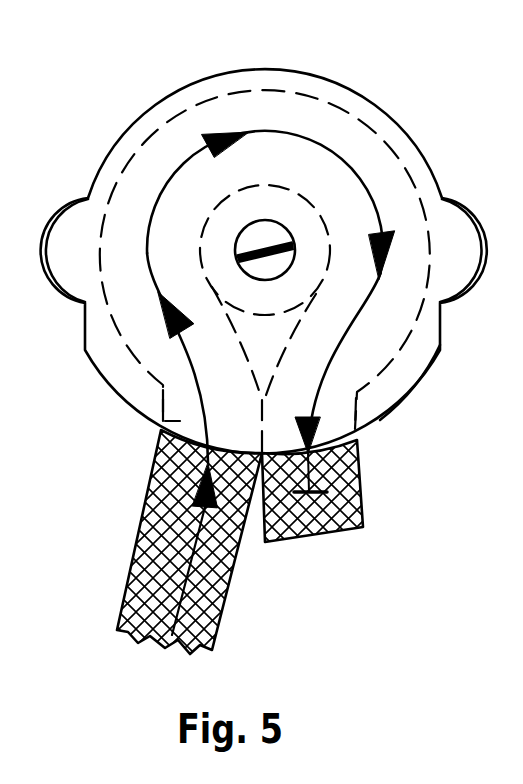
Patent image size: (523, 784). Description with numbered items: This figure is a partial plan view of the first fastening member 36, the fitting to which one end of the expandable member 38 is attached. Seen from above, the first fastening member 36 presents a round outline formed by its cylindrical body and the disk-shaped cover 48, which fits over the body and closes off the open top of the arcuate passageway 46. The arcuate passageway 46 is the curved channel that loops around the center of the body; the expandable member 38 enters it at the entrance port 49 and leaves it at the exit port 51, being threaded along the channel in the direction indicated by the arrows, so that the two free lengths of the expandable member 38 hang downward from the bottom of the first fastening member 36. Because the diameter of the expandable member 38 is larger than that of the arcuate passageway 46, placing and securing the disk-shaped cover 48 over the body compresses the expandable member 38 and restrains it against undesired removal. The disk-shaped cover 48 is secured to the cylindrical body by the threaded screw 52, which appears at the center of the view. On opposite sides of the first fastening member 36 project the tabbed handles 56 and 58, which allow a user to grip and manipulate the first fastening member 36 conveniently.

The first fastening member 36 is at (92, 365).
The expandable member 38 is at (150, 547).
The arcuate passageway 46 is at (152, 126).
The disk-shaped cover 48 is at (409, 360).
The entrance port 49 is at (163, 430).
The exit port 51 is at (369, 435).
The threaded screw 52 is at (266, 230).
The tabbed handle 56 is at (52, 256).
The tabbed handle 58 is at (463, 230).